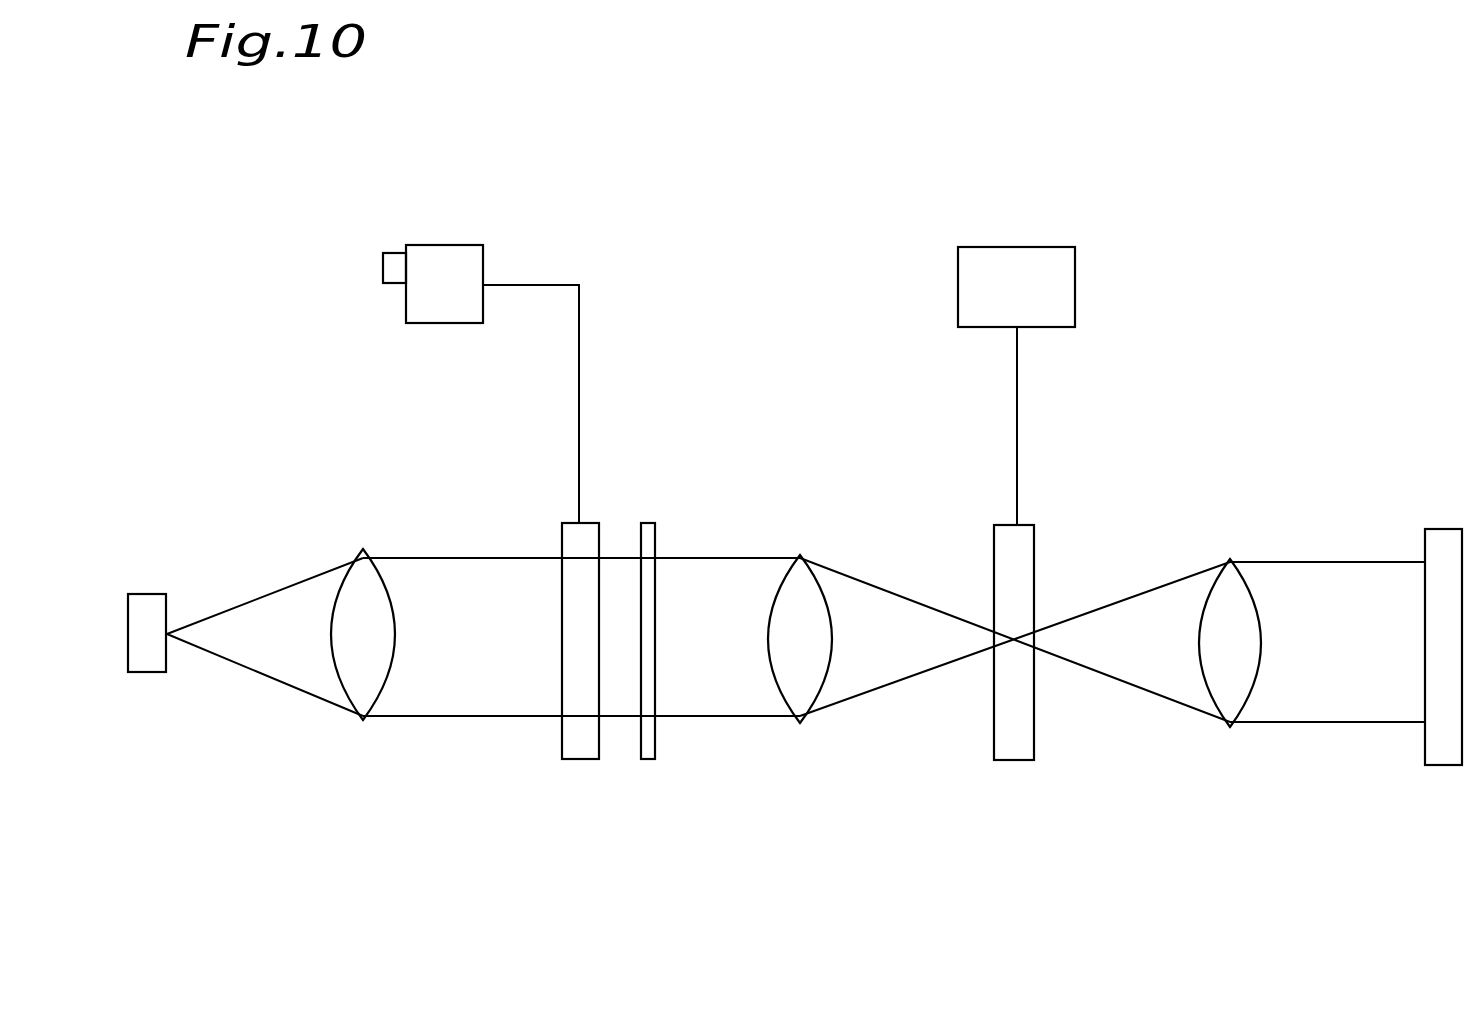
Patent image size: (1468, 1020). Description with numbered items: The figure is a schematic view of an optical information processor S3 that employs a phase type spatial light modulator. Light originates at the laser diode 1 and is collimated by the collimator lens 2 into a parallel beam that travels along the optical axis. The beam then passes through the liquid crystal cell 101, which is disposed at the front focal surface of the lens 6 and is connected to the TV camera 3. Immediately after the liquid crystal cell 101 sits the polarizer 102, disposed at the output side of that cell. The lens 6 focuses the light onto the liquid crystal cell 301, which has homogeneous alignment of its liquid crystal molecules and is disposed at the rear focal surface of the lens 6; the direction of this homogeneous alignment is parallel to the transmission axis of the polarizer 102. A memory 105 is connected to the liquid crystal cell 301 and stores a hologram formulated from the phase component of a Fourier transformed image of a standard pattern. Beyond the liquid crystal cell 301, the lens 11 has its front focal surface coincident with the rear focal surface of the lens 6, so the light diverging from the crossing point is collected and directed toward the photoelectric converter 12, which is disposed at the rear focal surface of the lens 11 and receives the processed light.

The optical information processor S3 is at (775, 175).
The laser diode 1 is at (145, 672).
The collimator lens 2 is at (358, 722).
The TV camera 3 is at (424, 323).
The liquid crystal cell 101 is at (577, 759).
The polarizer 102 is at (649, 759).
The lens 6 is at (797, 723).
The memory 105 is at (1075, 286).
The liquid crystal cell 301 is at (1012, 760).
The lens 11 is at (1226, 727).
The photoelectric converter 12 is at (1451, 765).